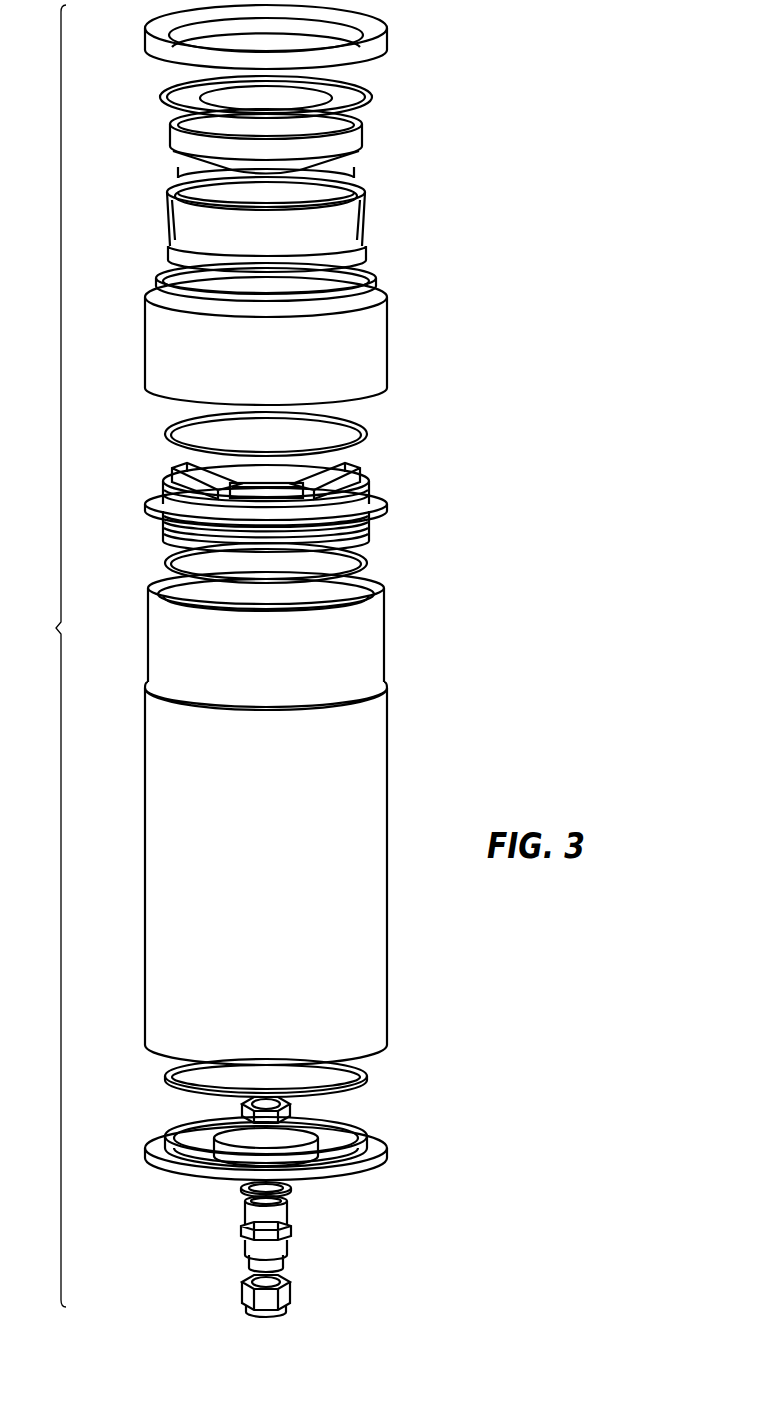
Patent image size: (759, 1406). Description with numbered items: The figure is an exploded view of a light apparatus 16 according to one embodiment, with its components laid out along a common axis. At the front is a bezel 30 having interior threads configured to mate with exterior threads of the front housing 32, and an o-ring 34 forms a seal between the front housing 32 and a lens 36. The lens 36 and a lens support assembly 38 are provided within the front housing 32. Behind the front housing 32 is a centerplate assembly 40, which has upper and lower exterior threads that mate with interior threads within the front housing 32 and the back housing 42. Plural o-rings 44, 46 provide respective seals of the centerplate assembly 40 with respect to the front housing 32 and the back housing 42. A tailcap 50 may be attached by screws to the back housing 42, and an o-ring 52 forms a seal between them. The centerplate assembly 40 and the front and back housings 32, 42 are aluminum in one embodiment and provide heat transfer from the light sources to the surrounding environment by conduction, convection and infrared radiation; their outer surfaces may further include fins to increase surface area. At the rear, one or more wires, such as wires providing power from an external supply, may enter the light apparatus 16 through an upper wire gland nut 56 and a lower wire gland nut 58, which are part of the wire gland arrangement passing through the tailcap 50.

The light apparatus 16 is at (44, 656).
The bezel 30 is at (381, 47).
The o-ring 34 is at (372, 92).
The lens 36 is at (360, 133).
The lens support assembly 38 is at (360, 201).
The front housing 32 is at (382, 335).
The o-ring 44 is at (367, 436).
The centerplate assembly 40 is at (380, 505).
The o-ring 46 is at (370, 560).
The back housing 42 is at (380, 737).
The o-ring 52 is at (366, 1070).
The upper wire gland nut 56 is at (292, 1109).
The tailcap 50 is at (380, 1148).
The lower wire gland nut 58 is at (280, 1295).